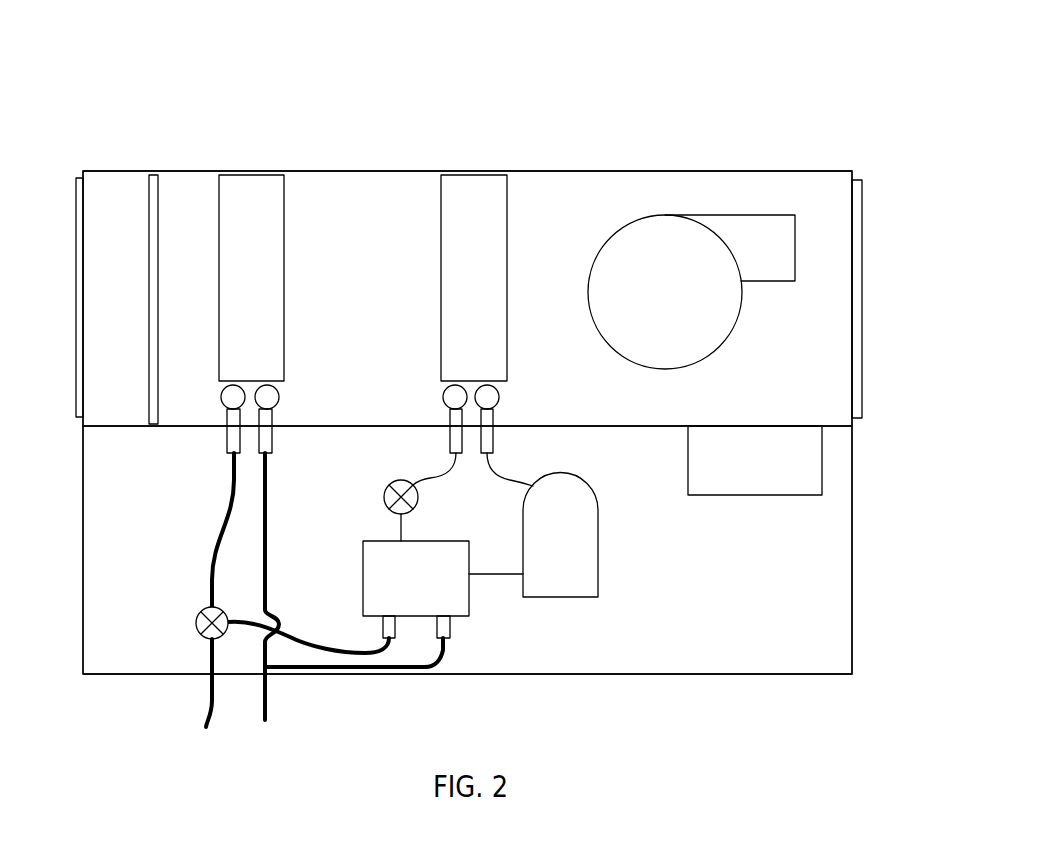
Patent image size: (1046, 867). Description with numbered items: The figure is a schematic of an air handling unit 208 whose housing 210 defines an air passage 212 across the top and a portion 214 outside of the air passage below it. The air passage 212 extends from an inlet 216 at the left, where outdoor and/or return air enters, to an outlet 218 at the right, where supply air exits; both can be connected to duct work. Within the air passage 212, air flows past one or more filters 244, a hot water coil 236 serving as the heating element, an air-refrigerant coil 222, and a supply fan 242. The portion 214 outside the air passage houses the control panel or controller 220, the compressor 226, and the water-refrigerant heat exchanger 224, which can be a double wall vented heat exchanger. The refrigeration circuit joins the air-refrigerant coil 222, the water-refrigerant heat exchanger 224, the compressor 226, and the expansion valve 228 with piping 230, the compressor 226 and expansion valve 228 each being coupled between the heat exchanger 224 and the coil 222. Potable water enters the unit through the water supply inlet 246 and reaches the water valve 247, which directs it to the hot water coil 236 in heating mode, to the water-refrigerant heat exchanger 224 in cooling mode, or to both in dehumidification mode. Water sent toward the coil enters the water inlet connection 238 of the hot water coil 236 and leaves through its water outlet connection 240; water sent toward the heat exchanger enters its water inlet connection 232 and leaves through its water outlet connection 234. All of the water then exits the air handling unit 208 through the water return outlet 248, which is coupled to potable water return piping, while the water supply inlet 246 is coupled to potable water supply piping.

The air handling unit 208 is at (735, 106).
The housing 210 is at (562, 173).
The air passage 212 is at (112, 302).
The portion outside of the air passage 214 is at (142, 532).
The inlet 216 is at (80, 198).
The outlet 218 is at (860, 368).
The control panel or controller 220 is at (775, 473).
The air-refrigerant coil 222 is at (467, 187).
The water-refrigerant heat exchanger 224 is at (375, 579).
The compressor 226 is at (585, 545).
The expansion valve 228 is at (400, 480).
The piping 230 is at (497, 466).
The water inlet connection 232 is at (389, 628).
The water outlet connection 234 is at (443, 622).
The hot water coil 236 is at (240, 182).
The water inlet connection 238 is at (233, 439).
The water outlet connection 240 is at (265, 435).
The supply fan 242 is at (697, 338).
The filter 244 is at (153, 187).
The water supply inlet 246 is at (205, 697).
The water valve 247 is at (196, 626).
The water return outlet 248 is at (268, 700).